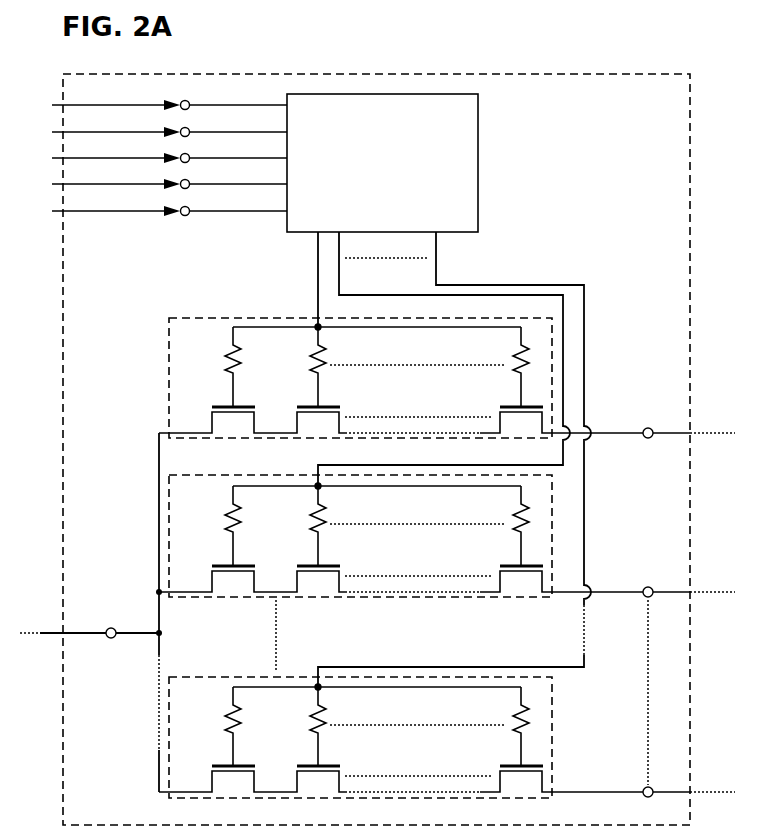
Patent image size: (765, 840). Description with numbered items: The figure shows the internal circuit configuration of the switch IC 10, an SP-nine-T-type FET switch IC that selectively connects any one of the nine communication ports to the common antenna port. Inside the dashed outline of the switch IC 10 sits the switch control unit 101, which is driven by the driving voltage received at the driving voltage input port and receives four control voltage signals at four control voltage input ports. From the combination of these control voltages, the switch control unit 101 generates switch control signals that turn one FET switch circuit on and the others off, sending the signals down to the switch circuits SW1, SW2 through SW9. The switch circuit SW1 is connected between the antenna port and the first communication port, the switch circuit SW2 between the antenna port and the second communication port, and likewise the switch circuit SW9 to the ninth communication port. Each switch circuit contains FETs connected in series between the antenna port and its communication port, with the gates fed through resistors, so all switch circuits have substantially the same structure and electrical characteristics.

The switch IC 10 is at (683, 74).
The switch control unit 101 is at (474, 94).
The switch circuit SW1 is at (219, 317).
The switch circuit SW2 is at (219, 474).
The switch circuit SW9 is at (219, 676).